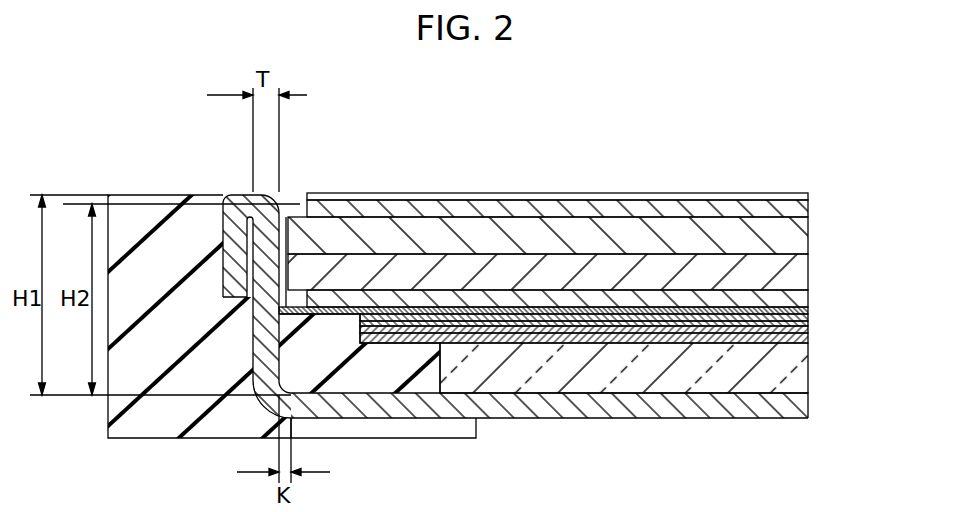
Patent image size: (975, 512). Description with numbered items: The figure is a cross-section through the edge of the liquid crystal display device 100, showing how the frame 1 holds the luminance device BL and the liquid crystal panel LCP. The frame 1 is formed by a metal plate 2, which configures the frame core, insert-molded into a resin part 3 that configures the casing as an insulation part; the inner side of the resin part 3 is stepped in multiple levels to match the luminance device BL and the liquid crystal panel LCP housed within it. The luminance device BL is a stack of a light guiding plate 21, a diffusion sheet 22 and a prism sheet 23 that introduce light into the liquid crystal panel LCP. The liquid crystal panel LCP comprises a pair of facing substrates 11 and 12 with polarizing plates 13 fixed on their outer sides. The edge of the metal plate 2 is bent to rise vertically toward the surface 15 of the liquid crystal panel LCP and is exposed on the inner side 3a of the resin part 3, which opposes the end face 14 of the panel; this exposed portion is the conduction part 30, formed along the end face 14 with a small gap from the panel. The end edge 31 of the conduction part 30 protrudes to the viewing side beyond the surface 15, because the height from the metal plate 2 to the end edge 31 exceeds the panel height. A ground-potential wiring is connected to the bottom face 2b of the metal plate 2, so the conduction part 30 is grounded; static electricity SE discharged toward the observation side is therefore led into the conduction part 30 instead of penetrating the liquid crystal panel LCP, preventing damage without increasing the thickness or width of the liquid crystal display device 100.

The frame 1 is at (166, 183).
The metal plate 2 is at (497, 301).
The bottom face of the metal plate 2b is at (657, 418).
The resin part 3 is at (163, 440).
The inner side of the resin part 3a is at (280, 277).
The substrate 11 is at (578, 268).
The substrate 12 is at (808, 237).
The polarizing plate 13 is at (808, 210).
The end face of the liquid crystal panel 14 is at (287, 235).
The surface of the liquid crystal panel 15 is at (648, 193).
The light guiding plate 21 is at (654, 368).
The diffusion sheet 22 is at (808, 338).
The prism sheet 23 is at (808, 326).
The conduction part 30 is at (281, 205).
The end edge of the conduction part 31 is at (243, 197).
The liquid crystal display device 100 is at (795, 138).
The static electricity SE is at (552, 137).
The liquid crystal panel LCP is at (609, 225).
The luminance device BL is at (638, 350).